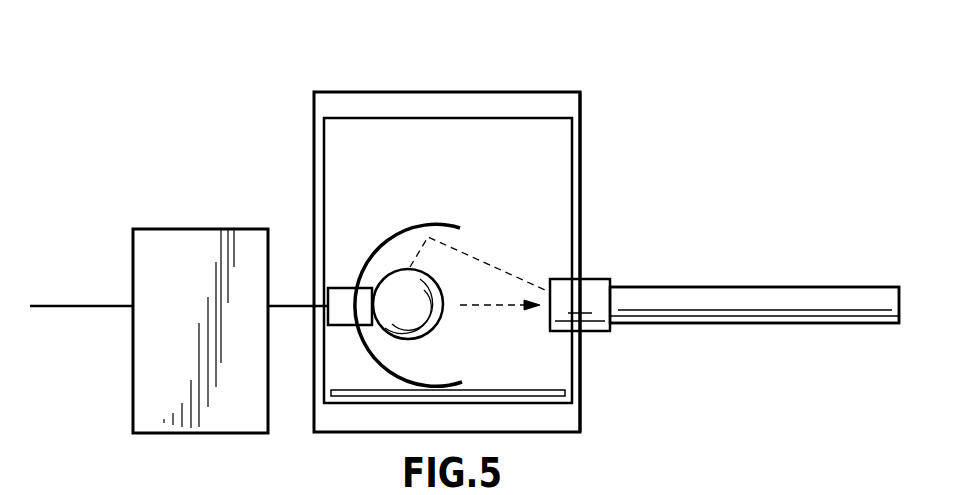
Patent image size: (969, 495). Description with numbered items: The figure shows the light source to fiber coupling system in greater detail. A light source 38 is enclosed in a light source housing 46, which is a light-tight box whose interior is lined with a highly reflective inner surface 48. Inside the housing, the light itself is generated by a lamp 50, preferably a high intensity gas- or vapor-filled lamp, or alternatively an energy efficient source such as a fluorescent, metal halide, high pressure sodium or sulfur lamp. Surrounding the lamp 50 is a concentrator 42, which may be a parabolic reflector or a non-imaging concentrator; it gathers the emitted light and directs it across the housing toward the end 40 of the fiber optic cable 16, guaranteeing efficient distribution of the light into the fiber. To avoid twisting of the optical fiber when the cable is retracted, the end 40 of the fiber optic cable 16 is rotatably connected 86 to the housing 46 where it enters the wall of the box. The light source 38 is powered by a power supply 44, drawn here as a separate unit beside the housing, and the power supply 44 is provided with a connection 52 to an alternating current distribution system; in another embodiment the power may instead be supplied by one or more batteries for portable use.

The fiber optic cable 16 is at (838, 287).
The light source 38 is at (552, 92).
The end of the fiber optic cable 40 is at (614, 285).
The concentrator 42 is at (445, 228).
The power supply 44 is at (245, 229).
The light source housing 46 is at (581, 140).
The reflective inner surface 48 is at (571, 200).
The lamp 50 is at (438, 328).
The connection 52 is at (110, 306).
The rotatable connection 86 is at (594, 279).